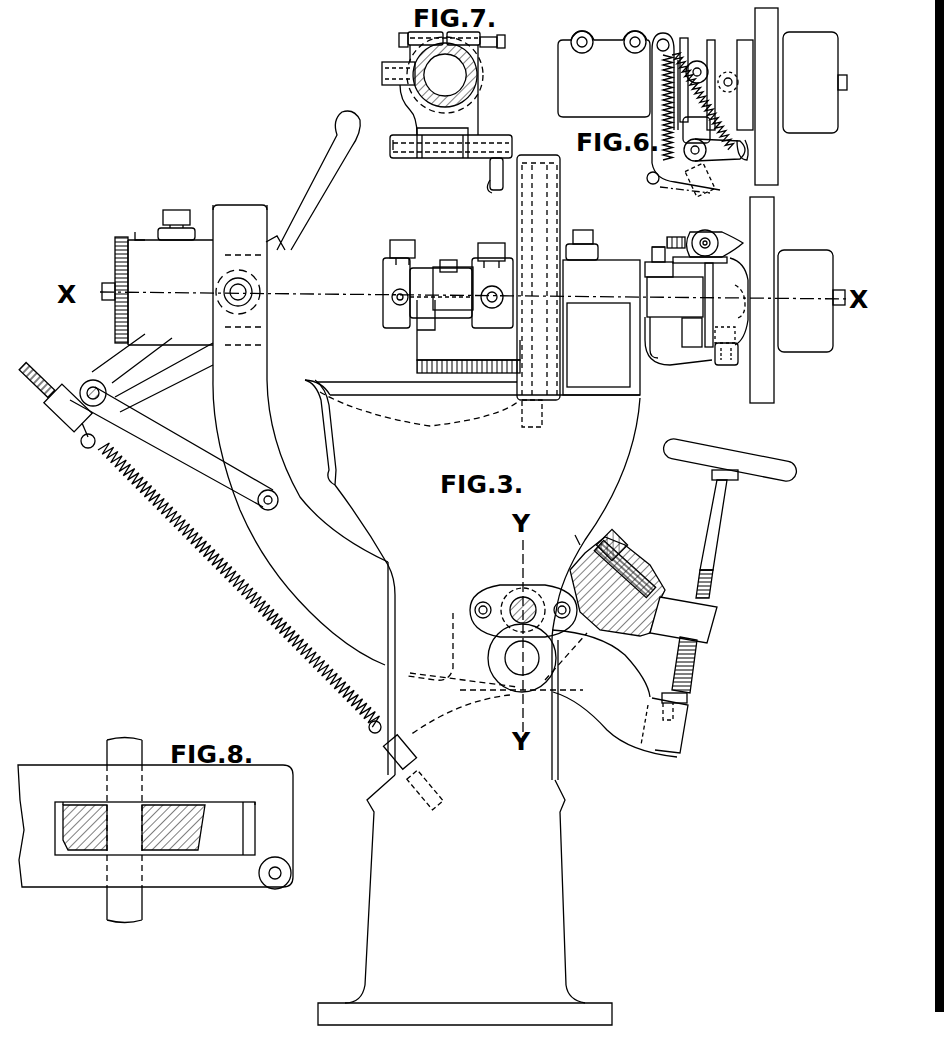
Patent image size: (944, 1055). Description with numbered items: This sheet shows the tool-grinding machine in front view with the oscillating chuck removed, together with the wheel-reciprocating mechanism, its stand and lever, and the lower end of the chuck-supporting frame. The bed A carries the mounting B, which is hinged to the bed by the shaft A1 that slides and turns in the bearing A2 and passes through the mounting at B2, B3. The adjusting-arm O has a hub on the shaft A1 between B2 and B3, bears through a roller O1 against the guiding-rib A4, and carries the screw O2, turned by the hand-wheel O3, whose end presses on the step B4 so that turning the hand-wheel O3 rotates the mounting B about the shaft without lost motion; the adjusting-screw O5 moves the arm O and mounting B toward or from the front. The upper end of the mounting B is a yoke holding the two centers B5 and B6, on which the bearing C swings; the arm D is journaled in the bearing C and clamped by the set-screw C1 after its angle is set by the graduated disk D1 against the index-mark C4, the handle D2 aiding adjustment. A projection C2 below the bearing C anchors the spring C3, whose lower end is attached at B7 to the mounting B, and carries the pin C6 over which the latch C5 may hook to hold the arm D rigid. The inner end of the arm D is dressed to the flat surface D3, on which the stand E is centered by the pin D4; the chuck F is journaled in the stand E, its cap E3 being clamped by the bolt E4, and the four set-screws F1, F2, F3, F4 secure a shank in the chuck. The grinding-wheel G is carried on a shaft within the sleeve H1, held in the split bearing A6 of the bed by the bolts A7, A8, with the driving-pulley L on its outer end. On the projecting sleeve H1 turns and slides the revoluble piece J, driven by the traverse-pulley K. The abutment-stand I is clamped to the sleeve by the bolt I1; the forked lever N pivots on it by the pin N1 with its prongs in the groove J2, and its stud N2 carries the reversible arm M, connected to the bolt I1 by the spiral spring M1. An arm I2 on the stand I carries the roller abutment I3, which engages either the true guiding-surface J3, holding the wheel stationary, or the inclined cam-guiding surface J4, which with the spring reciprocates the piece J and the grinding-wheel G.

In FIG. 3, the bed A is at (465, 793).
In FIG. 3, the shaft A1 is at (522, 658).
In FIG. 8, the shaft A1 is at (125, 830).
In FIG. 3, the bearing A2 is at (517, 658).
In FIG. 3, the guiding-rib A4 is at (575, 537).
In FIG. 3, the bearing A6 is at (601, 312).
In FIG. 6, the bearing A6 is at (604, 74).
In FIG. 6, the bolt A7 is at (586, 26).
In FIG. 6, the bolt A8 is at (639, 26).
In FIG. 3, the mounting B is at (445, 481).
In FIG. 8, the bearing B2 is at (155, 826).
In FIG. 8, the bearing B3 is at (159, 789).
In FIG. 3, the step B4 is at (688, 697).
In FIG. 8, the step B4 is at (277, 882).
In FIG. 3, the center B5 is at (248, 292).
In FIG. 3, the center B6 is at (270, 510).
In FIG. 3, the spring attachment point B7 is at (390, 757).
In FIG. 3, the bearing C is at (152, 311).
In FIG. 3, the set-screw C1 is at (176, 209).
In FIG. 3, the projection C2 is at (57, 409).
In FIG. 3, the spring C3 is at (240, 587).
In FIG. 3, the index-mark C4 is at (132, 223).
In FIG. 3, the latch C5 is at (171, 447).
In FIG. 3, the pin C6 is at (91, 385).
In FIG. 3, the arm D is at (377, 308).
In FIG. 3, the graduated disk D1 is at (116, 244).
In FIG. 3, the handle D2 is at (313, 180).
In FIG. 3, the flat surface D3 is at (457, 354).
In FIG. 3, the pin D4 is at (505, 390).
In FIG. 3, the stand E is at (468, 330).
In FIG. 3, the cap E3 is at (441, 288).
In FIG. 3, the bolt E4 is at (454, 250).
In FIG. 3, the chuck F is at (452, 306).
In FIG. 3, the set-screw F1 is at (503, 295).
In FIG. 3, the set-screw F2 is at (492, 271).
In FIG. 3, the set-screw F3 is at (405, 236).
In FIG. 3, the set-screw F4 is at (382, 293).
In FIG. 3, the grinding-wheel G is at (538, 277).
In FIG. 7, the sleeve H1 is at (445, 75).
In FIG. 3, the abutment-stand I is at (678, 313).
In FIG. 7, the abutment-stand I is at (478, 60).
In FIG. 6, the abutment-stand I is at (686, 111).
In FIG. 3, the bolt I1 is at (652, 248).
In FIG. 7, the bolt I1 is at (505, 42).
In FIG. 3, the arm I2 is at (658, 355).
In FIG. 7, the arm I2 is at (386, 76).
In FIG. 3, the abutment I3 is at (728, 365).
In FIG. 7, the abutment I3 is at (404, 68).
In FIG. 6, the abutment I3 is at (742, 42).
In FIG. 3, the revoluble piece J is at (713, 305).
In FIG. 6, the groove J2 is at (699, 61).
In FIG. 3, the true guiding-surface J3 is at (733, 301).
In FIG. 6, the true guiding-surface J3 is at (715, 42).
In FIG. 3, the cam-guiding surface J4 is at (744, 299).
In FIG. 6, the cam-guiding surface J4 is at (741, 136).
In FIG. 3, the traverse-pulley K is at (762, 300).
In FIG. 6, the traverse-pulley K is at (767, 96).
In FIG. 3, the driving-pulley L is at (811, 301).
In FIG. 6, the driving-pulley L is at (815, 82).
In FIG. 3, the reversible arm M is at (712, 237).
In FIG. 6, the reversible arm M is at (703, 168).
In FIG. 3, the spiral spring M1 is at (672, 226).
In FIG. 6, the spiral spring M1 is at (703, 100).
In FIG. 3, the forked lever N is at (693, 333).
In FIG. 7, the forked lever N is at (474, 120).
In FIG. 6, the forked lever N is at (696, 129).
In FIG. 3, the pin N1 is at (714, 362).
In FIG. 7, the pin N1 is at (394, 146).
In FIG. 6, the pin N1 is at (647, 176).
In FIG. 3, the stud N2 is at (708, 238).
In FIG. 7, the stud N2 is at (505, 186).
In FIG. 3, the adjusting-arm O is at (643, 590).
In FIG. 8, the adjusting-arm O is at (134, 827).
In FIG. 3, the roller O1 is at (612, 545).
In FIG. 3, the screw O2 is at (714, 548).
In FIG. 3, the hand-wheel O3 is at (773, 468).
In FIG. 3, the adjusting-screw O5 is at (518, 600).